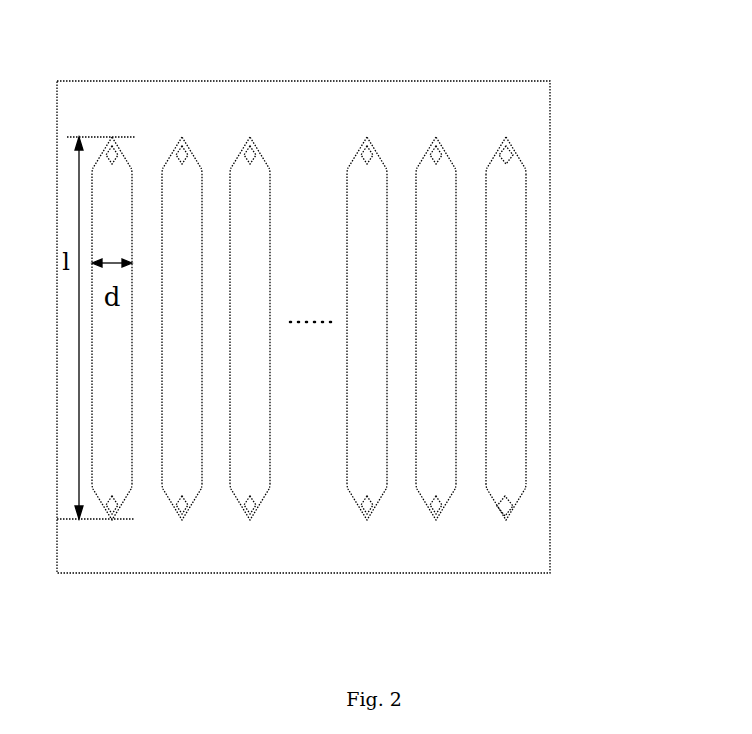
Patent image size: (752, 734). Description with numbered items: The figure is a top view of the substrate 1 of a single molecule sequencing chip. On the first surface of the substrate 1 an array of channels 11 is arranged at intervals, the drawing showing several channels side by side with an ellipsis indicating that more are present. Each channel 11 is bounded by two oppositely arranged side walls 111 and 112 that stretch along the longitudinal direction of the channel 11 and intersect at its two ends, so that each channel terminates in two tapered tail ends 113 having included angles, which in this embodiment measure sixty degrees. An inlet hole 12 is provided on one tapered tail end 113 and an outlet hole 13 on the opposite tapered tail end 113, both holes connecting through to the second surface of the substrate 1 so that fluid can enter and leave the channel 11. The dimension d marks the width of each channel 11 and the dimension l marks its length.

The substrate 1 is at (427, 540).
The channel 11 is at (392, 314).
The side wall 111 is at (525, 220).
The side wall 112 is at (490, 327).
The tapered tail end 113 is at (503, 157).
The inlet hole 12 is at (507, 157).
The outlet hole 13 is at (503, 508).